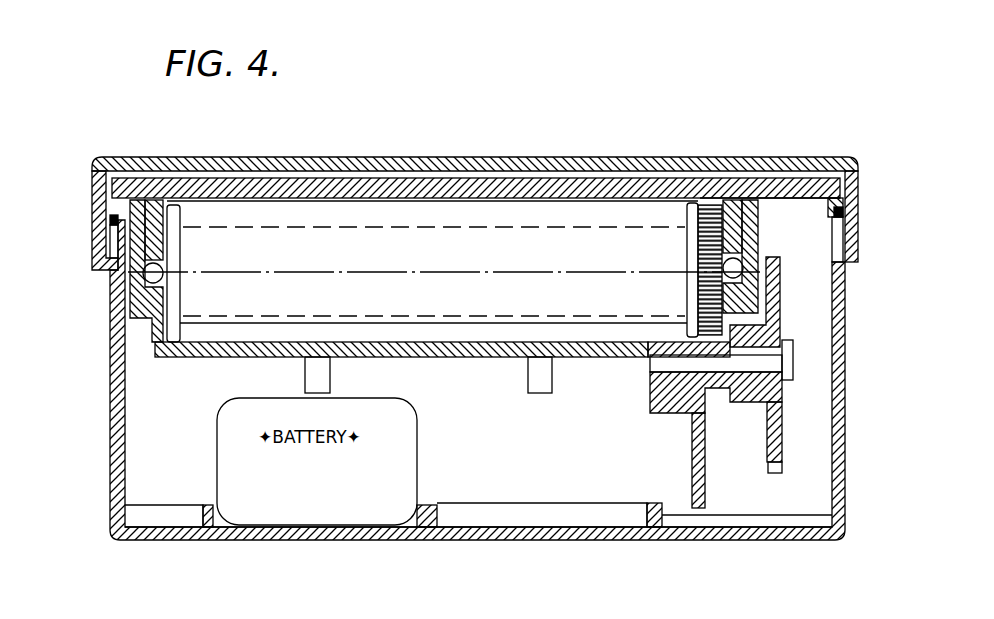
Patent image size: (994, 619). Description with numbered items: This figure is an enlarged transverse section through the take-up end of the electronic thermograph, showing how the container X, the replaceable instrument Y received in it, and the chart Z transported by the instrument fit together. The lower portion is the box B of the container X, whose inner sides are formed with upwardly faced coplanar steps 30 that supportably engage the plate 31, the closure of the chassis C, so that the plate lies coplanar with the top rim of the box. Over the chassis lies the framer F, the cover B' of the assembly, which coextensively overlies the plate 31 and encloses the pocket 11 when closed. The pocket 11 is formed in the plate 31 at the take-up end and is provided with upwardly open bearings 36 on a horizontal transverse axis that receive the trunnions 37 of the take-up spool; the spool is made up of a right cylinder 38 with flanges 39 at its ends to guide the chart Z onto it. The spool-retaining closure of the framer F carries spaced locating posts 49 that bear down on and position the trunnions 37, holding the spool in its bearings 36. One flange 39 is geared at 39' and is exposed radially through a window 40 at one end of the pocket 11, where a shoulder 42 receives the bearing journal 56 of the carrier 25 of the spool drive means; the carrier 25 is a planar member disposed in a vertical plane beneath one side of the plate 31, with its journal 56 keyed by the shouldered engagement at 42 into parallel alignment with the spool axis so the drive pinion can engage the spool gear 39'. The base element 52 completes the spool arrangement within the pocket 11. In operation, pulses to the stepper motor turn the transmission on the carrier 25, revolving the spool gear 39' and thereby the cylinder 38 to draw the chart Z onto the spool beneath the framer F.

The cover B' is at (475, 195).
The framer F is at (520, 174).
The right cylinder 38 is at (598, 226).
The chassis C is at (766, 192).
The plate 31 is at (840, 192).
The steps 30 is at (108, 218).
The instrument Y is at (835, 222).
The trunnions 37 is at (143, 272).
The bearings 36 is at (163, 286).
The window 40 is at (735, 320).
The flanges 39 is at (432, 272).
The spool gear 39' is at (675, 270).
The locating posts 49 is at (162, 238).
The bottom plate 52 is at (176, 349).
The pocket 11 is at (410, 343).
The shoulder 42 is at (657, 348).
The bearing journal 56 is at (662, 398).
The carrier 25 is at (687, 423).
The box B is at (498, 380).
The container X is at (435, 545).
The chart Z is at (444, 262).